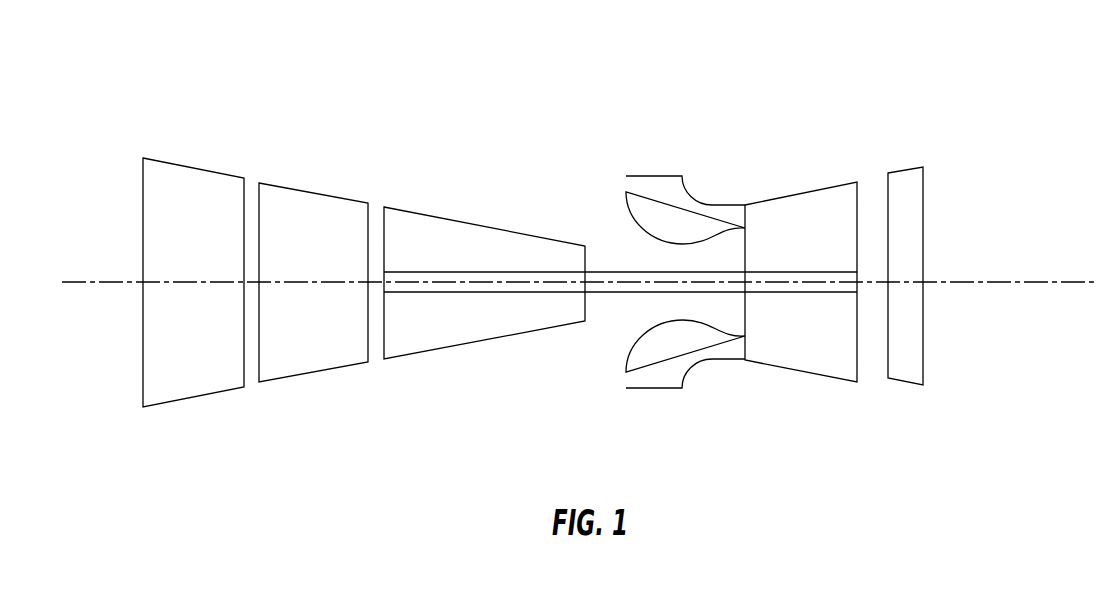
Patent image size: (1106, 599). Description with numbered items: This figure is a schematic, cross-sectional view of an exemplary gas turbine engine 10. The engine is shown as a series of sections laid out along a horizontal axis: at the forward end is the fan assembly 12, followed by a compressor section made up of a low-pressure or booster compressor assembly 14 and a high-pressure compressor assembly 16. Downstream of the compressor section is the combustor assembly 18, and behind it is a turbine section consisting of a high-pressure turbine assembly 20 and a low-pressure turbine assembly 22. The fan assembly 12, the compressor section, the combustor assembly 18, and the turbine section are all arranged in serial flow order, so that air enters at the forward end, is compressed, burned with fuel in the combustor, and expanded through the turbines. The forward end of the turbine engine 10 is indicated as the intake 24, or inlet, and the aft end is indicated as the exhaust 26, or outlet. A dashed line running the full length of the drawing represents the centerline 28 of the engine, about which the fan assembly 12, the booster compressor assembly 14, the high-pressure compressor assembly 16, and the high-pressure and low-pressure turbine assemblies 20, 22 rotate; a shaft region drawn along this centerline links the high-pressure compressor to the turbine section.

The turbine engine 10 is at (921, 92).
The fan assembly 12 is at (197, 398).
The booster compressor assembly 14 is at (320, 372).
The high-pressure compressor assembly 16 is at (512, 335).
The combustor assembly 18 is at (652, 383).
The high-pressure turbine assembly 20 is at (827, 377).
The low-pressure turbine assembly 22 is at (912, 385).
The intake 24 is at (120, 159).
The exhaust 26 is at (966, 172).
The centerline 28 is at (1028, 272).